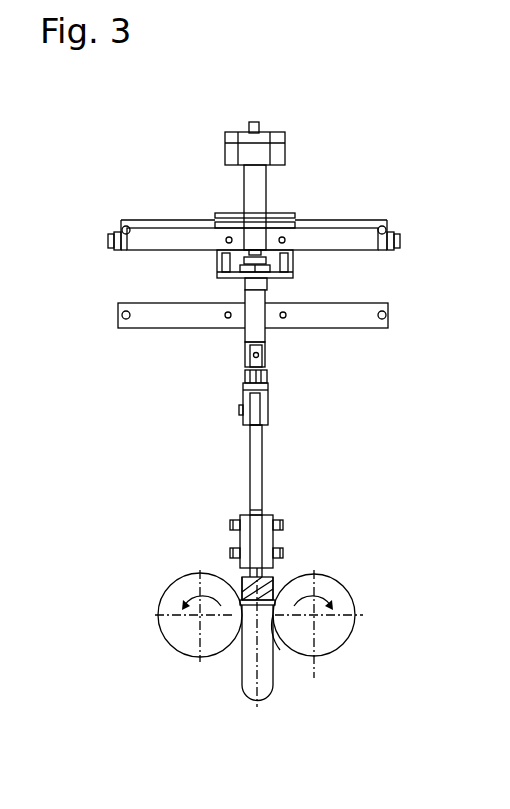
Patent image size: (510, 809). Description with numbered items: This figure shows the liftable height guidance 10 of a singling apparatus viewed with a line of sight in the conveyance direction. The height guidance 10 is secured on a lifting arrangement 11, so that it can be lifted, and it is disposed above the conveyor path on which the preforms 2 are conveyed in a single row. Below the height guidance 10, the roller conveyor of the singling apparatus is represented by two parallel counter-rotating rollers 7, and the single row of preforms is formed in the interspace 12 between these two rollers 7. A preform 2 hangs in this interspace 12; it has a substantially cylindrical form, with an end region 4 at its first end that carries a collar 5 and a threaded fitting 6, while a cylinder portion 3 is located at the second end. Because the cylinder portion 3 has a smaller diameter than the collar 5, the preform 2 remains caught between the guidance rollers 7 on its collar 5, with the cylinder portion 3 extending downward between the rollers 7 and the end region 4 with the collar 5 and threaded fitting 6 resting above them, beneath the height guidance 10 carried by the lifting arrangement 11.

The preform 2 is at (242, 665).
The cylinder portion 3 is at (262, 675).
The end region 4 is at (273, 590).
The collar 5 is at (238, 597).
The threaded fitting 6 is at (275, 597).
The rollers 7 is at (173, 602).
The height guidance 10 is at (257, 448).
The lifting arrangement 11 is at (313, 353).
The interspace 12 is at (278, 647).